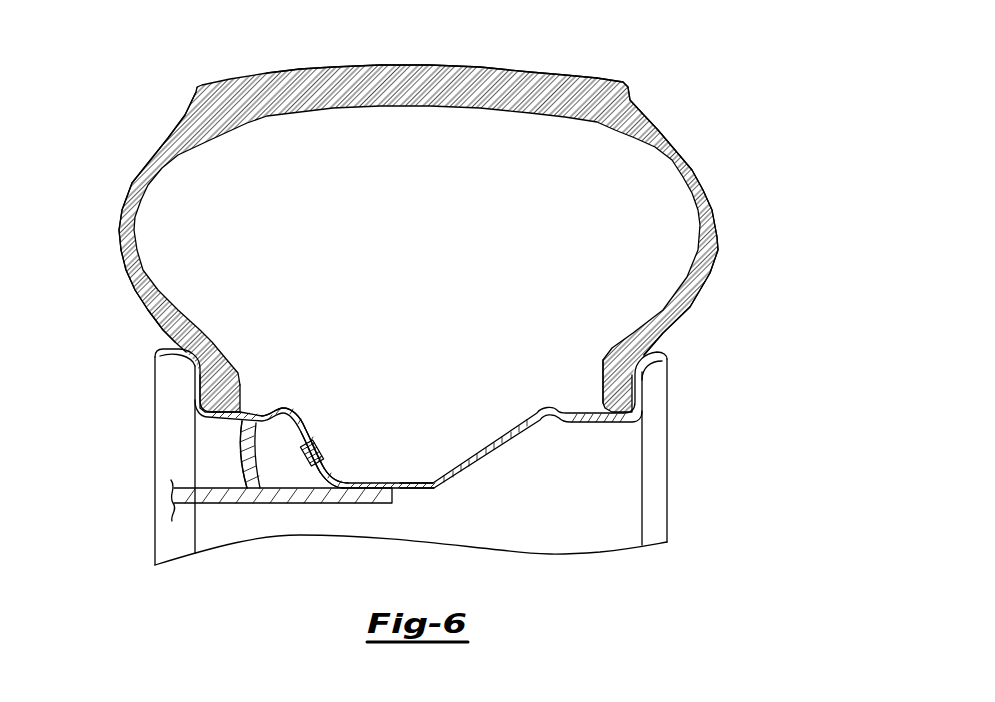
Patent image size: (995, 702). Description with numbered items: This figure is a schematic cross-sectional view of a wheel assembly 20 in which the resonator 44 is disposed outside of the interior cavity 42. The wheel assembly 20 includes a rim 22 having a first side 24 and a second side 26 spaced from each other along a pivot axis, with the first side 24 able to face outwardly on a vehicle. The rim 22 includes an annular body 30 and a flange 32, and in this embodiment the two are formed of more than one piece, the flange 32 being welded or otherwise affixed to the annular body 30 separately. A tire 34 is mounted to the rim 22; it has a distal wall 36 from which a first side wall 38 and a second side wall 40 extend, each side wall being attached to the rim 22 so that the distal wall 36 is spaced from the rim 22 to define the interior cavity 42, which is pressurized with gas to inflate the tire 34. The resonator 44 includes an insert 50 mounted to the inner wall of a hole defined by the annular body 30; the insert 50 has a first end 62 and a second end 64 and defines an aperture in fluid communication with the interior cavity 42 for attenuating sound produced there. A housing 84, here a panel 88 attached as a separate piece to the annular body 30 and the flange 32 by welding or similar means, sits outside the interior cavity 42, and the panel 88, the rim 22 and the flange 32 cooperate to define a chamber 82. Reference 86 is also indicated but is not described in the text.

The wheel assembly 20 is at (150, 105).
The rim 22 is at (618, 501).
The first side 24 is at (155, 523).
The second side 26 is at (668, 475).
The annular body 30 is at (251, 416).
The flange 32 is at (215, 505).
The tire 34 is at (631, 92).
The distal wall 36 is at (584, 86).
The first side wall 38 is at (126, 273).
The second side wall 40 is at (721, 251).
The interior cavity 42 is at (668, 196).
The resonator 44 is at (324, 419).
The insert 50 is at (325, 463).
The first end 62 is at (323, 442).
The second end 64 is at (297, 465).
The chamber 82 is at (303, 476).
The well bottom region 86 is at (420, 509).
The housing 84 is at (250, 474).
The panel 88 is at (239, 459).